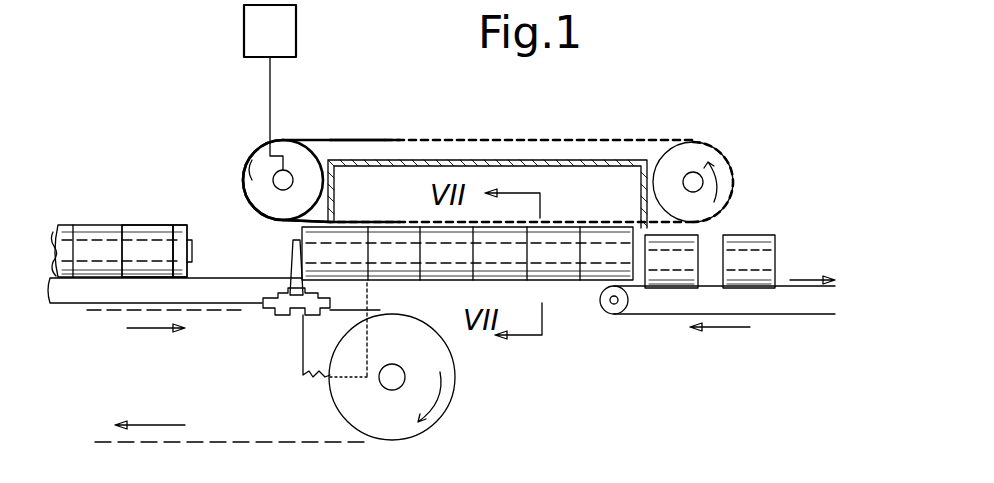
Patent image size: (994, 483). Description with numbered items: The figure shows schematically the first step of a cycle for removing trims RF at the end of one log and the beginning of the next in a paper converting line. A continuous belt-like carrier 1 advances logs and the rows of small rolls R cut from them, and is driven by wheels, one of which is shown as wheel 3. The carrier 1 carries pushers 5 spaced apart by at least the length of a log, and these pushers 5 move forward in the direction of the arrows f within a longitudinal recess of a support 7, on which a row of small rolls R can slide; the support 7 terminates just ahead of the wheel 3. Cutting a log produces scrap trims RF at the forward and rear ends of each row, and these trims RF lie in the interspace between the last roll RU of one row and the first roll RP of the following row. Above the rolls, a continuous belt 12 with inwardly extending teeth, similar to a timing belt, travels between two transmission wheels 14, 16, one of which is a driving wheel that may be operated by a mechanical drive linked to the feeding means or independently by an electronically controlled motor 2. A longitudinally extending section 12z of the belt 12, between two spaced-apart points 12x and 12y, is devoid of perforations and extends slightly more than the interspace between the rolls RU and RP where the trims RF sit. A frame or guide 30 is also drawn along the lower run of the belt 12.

The continuous belt-like carrier 1 is at (178, 443).
The electronically controlled motor 2 is at (296, 35).
The wheel 3 is at (345, 405).
The pusher 5 is at (270, 298).
The support 7 is at (244, 274).
The continuous toothed belt 12 is at (602, 140).
The first spaced-apart point 12x is at (322, 218).
The second spaced-apart point 12y is at (385, 140).
The longitudinally-extending belt section 12z is at (247, 158).
The transmission wheel 14 is at (693, 155).
The transmission wheel 16 is at (289, 150).
The guide frame 30 is at (430, 160).
The small roll R is at (87, 232).
The first roll of following row RP is at (147, 230).
The trim RF is at (180, 225).
The last roll of a row RU is at (350, 270).
The feed direction f is at (149, 330).